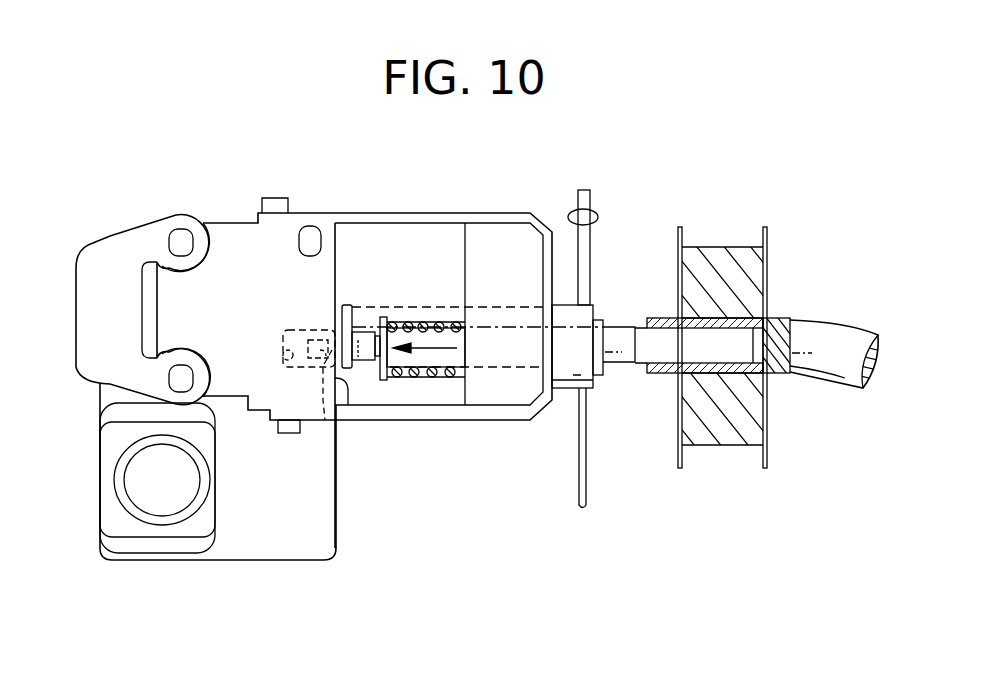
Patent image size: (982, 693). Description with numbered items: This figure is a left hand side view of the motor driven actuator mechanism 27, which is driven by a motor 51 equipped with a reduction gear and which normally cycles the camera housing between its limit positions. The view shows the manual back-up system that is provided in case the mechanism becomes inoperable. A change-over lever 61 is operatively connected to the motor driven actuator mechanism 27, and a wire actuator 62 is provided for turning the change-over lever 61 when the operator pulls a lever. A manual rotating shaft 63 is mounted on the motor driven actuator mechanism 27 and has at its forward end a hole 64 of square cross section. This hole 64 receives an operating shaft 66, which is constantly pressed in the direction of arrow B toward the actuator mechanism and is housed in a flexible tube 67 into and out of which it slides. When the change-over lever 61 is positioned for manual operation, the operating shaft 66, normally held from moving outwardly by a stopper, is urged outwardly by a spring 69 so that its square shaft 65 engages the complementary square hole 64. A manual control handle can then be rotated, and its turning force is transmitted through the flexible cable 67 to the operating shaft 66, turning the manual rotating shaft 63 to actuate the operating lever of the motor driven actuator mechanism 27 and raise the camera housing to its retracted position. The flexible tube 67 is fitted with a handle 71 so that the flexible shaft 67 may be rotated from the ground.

The motor driven actuator mechanism 27 is at (213, 212).
The motor 51 is at (106, 462).
The change-over lever 61 is at (593, 245).
The wire actuator 62 is at (580, 455).
The manual rotating shaft 63 is at (299, 330).
The hole 64 is at (336, 412).
The square shaft 65 is at (368, 360).
The operating shaft 66 is at (437, 375).
The flexible tube 67 is at (813, 318).
The spring 69 is at (405, 322).
The handle 71 is at (768, 453).
The direction of arrow B is at (456, 346).